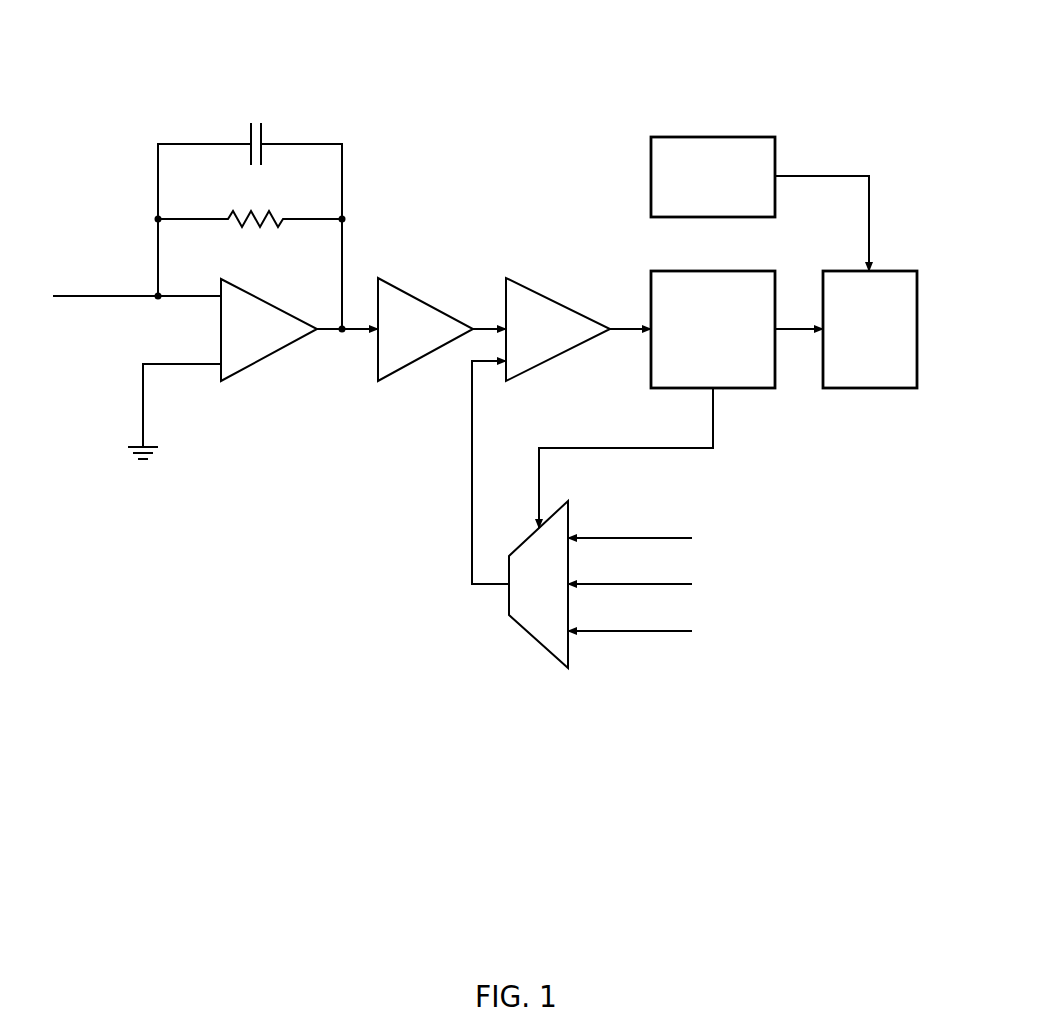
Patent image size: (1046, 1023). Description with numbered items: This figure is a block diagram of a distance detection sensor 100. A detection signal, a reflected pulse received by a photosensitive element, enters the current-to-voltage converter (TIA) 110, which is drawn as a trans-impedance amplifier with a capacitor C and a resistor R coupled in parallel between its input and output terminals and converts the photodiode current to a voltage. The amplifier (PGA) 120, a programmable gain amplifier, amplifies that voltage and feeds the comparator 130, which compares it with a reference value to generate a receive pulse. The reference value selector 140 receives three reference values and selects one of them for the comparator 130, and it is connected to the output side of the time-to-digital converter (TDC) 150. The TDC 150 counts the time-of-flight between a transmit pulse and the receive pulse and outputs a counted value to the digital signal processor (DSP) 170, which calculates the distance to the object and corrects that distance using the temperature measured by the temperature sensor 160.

The distance detection sensor 100 is at (226, 58).
The current-to-voltage converter (TIA) 110 is at (268, 360).
The amplifier (PGA) 120 is at (423, 302).
The comparator 130 is at (560, 302).
The reference value selector 140 is at (538, 647).
The time-to-digital converter (TDC) 150 is at (745, 392).
The temperature sensor 160 is at (713, 143).
The digital signal processor (DSP) 170 is at (893, 268).